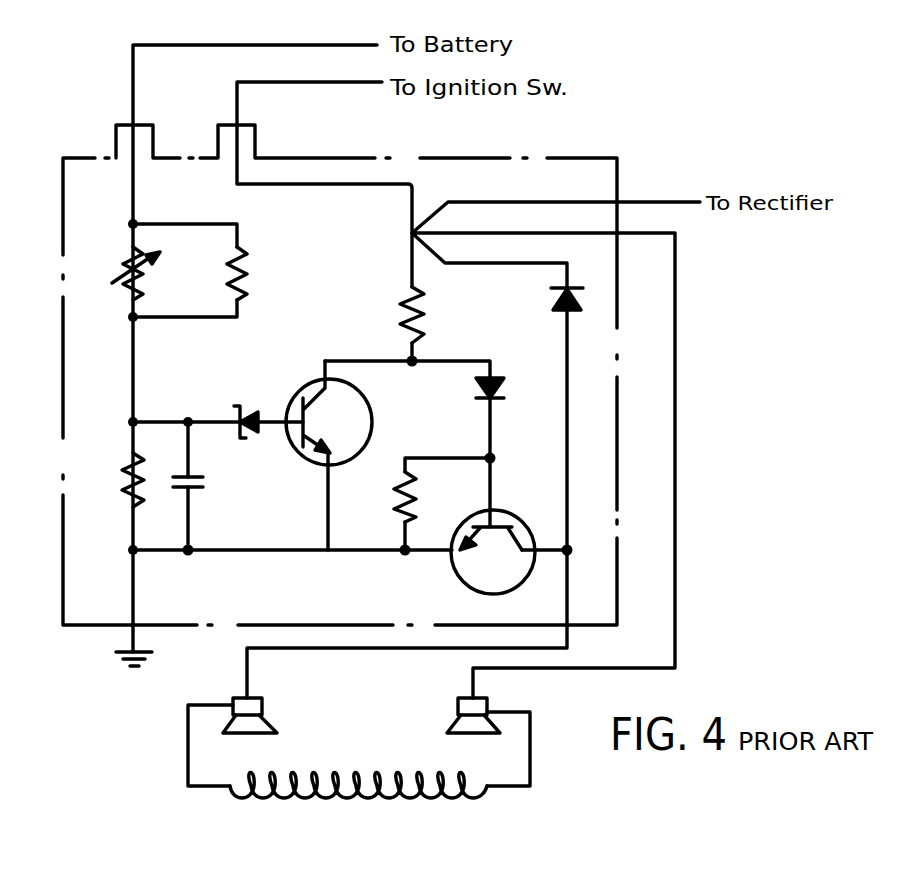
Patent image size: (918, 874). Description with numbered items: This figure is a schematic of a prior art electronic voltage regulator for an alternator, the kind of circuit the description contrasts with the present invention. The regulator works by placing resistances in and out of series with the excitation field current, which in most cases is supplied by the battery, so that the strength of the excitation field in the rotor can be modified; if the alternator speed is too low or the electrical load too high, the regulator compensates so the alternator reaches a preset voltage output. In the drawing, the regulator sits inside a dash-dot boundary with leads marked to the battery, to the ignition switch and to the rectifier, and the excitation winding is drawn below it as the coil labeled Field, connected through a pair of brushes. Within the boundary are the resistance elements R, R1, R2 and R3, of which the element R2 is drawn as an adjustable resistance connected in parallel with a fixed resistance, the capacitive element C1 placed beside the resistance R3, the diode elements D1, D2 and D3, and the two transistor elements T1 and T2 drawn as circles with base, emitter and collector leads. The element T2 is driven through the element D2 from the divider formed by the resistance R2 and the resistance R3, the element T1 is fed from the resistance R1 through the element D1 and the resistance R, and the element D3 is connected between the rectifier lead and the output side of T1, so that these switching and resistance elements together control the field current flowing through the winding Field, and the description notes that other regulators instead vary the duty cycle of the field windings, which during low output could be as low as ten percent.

The resistor R1 is at (432, 315).
The variable resistor R2 is at (179, 273).
The resistor R3 is at (116, 480).
The resistor R is at (382, 497).
The capacitor C1 is at (208, 492).
The diode D1 is at (510, 392).
The zener diode D2 is at (249, 405).
The diode D3 is at (547, 305).
The transistor T1 is at (472, 554).
The transistor T2 is at (329, 438).
The field winding Field is at (359, 764).